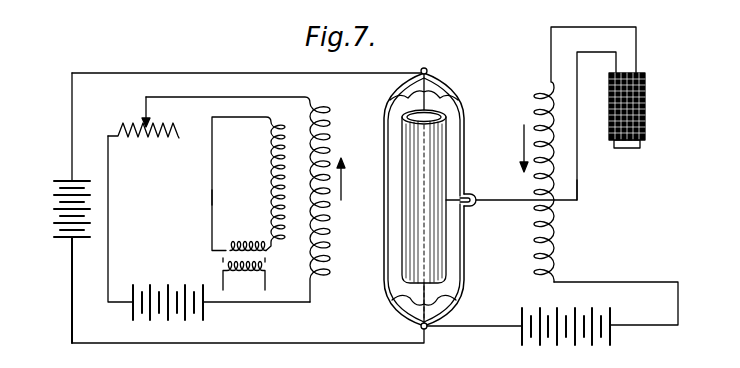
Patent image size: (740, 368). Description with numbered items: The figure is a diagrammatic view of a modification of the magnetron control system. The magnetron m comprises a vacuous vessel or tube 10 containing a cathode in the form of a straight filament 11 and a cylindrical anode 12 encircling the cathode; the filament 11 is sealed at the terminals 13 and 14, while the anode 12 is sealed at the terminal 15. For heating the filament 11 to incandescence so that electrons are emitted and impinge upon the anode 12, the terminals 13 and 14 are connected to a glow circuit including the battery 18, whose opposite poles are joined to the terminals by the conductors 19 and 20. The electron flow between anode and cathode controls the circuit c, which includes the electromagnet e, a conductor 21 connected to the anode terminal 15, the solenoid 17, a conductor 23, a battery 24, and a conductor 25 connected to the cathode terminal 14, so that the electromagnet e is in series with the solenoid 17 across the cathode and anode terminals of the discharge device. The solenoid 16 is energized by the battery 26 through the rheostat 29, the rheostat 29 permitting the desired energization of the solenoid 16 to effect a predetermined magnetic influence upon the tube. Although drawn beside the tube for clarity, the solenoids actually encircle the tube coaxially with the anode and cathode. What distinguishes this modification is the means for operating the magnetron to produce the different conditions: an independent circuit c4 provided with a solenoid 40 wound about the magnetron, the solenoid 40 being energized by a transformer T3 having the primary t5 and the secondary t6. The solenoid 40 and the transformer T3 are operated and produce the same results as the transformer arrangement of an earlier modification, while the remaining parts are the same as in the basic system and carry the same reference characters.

The vacuous vessel or tube 10 is at (452, 87).
The cathode filament 11 is at (400, 101).
The cylindrical anode 12 is at (447, 150).
The cathode terminal 13 is at (428, 69).
The cathode terminal 14 is at (420, 327).
The anode terminal 15 is at (475, 210).
The solenoid 16 is at (332, 140).
The solenoid 17 is at (548, 164).
The battery 18 is at (60, 205).
The conductor 19 is at (218, 73).
The conductor 20 is at (287, 343).
The conductor 21 is at (578, 165).
The conductor 23 is at (638, 282).
The battery 24 is at (548, 312).
The conductor 25 is at (483, 333).
The battery 26 is at (165, 283).
The rheostat 29 is at (163, 146).
The solenoid 40 is at (272, 164).
The independent circuit c4 is at (213, 196).
The transformer secondary t6 is at (238, 243).
The transformer primary t5 is at (242, 272).
The transformer T3 is at (254, 265).
The magnetron m is at (466, 105).
The controlled circuit c is at (578, 187).
The electromagnet e is at (646, 108).